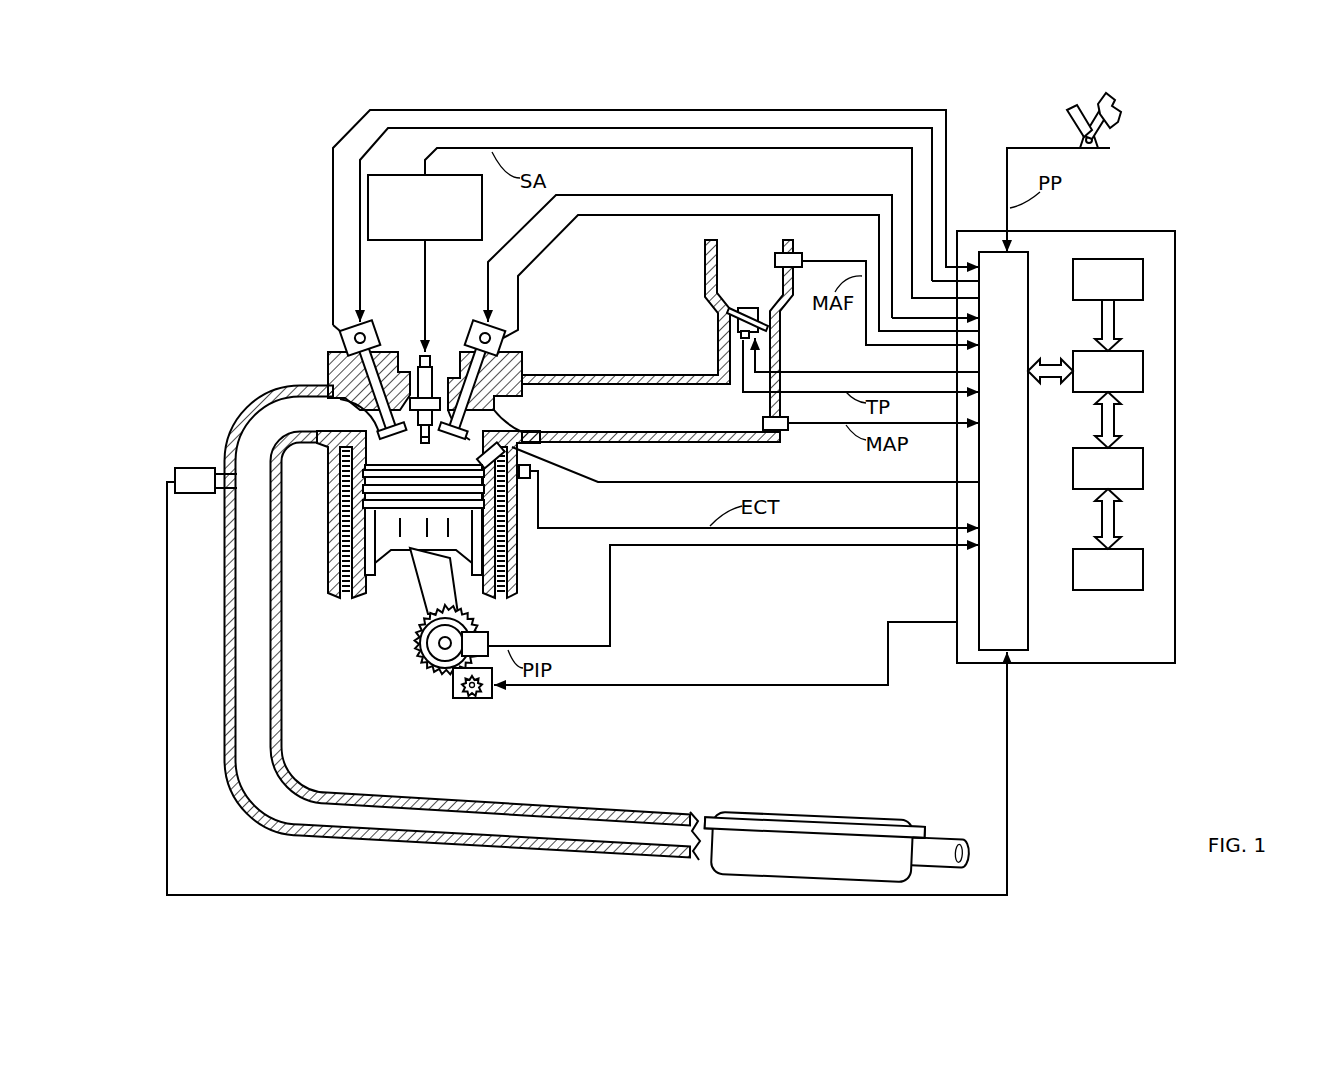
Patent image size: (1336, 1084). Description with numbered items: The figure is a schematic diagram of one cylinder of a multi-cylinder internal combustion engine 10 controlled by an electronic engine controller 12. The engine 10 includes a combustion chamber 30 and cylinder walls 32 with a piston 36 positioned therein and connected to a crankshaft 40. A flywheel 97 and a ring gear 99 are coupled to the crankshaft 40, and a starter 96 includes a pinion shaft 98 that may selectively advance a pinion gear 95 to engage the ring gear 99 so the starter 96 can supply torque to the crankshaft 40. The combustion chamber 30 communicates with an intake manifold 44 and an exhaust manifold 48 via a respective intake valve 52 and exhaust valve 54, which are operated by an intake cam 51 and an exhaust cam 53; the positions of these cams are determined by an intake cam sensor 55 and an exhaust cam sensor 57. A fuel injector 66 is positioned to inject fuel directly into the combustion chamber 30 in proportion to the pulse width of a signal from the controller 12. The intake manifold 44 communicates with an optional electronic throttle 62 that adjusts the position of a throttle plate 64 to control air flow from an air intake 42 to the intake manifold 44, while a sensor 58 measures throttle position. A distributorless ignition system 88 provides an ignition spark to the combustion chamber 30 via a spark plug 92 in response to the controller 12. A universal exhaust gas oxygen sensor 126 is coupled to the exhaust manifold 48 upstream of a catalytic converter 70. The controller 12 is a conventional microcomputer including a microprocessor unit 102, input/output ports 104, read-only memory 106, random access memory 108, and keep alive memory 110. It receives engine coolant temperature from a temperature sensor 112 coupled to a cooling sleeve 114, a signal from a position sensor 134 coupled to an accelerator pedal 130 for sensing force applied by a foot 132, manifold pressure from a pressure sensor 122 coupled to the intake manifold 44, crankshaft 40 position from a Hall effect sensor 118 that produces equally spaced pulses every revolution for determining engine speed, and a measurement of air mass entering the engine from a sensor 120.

The internal combustion engine 10 is at (268, 313).
The electronic engine controller 12 is at (1175, 232).
The combustion chamber 30 is at (420, 450).
The cylinder walls 32 is at (366, 598).
The piston 36 is at (405, 540).
The crankshaft 40 is at (428, 662).
The air intake 42 is at (733, 286).
The intake manifold 44 is at (676, 419).
The exhaust manifold 48 is at (284, 424).
The intake cam 51 is at (480, 325).
The intake valve 52 is at (465, 425).
The exhaust cam 53 is at (370, 325).
The exhaust valve 54 is at (335, 386).
The intake cam sensor 55 is at (500, 342).
The exhaust cam sensor 57 is at (348, 340).
The throttle position sensor 58 is at (738, 340).
The electronic throttle 62 is at (760, 314).
The throttle plate 64 is at (733, 314).
The fuel injector 66 is at (522, 460).
The catalytic converter 70 is at (735, 808).
The distributorless ignition system 88 is at (382, 175).
The spark plug 92 is at (430, 365).
The pinion gear 95 is at (478, 697).
The starter 96 is at (491, 695).
The flywheel 97 is at (420, 645).
The pinion shaft 98 is at (463, 690).
The ring gear 99 is at (438, 678).
The microprocessor unit 102 is at (1143, 370).
The input/output ports 104 is at (1028, 262).
The read-only memory 106 is at (1143, 280).
The random access memory 108 is at (1143, 470).
The keep alive memory 110 is at (1143, 570).
The temperature sensor 112 is at (532, 480).
The cooling sleeve 114 is at (505, 545).
The Hall effect sensor 118 is at (488, 636).
The air mass sensor 120 is at (798, 255).
The pressure sensor 122 is at (786, 430).
The Universal Exhaust Gas Oxygen sensor 126 is at (178, 470).
The accelerator pedal 130 is at (1072, 110).
The foot 132 is at (1114, 107).
The position sensor 134 is at (1110, 148).